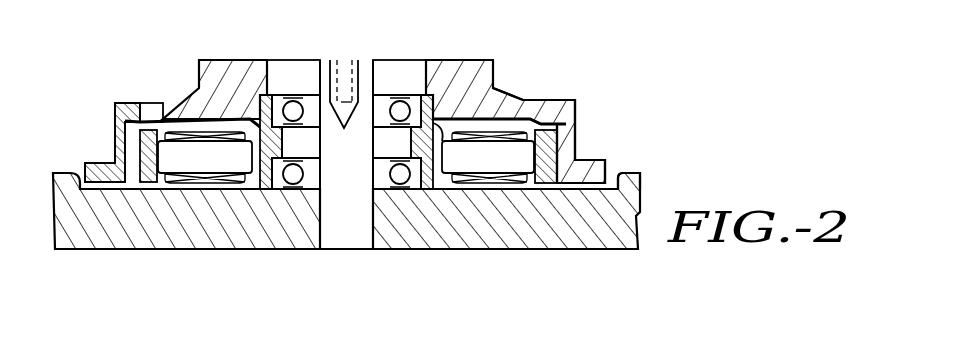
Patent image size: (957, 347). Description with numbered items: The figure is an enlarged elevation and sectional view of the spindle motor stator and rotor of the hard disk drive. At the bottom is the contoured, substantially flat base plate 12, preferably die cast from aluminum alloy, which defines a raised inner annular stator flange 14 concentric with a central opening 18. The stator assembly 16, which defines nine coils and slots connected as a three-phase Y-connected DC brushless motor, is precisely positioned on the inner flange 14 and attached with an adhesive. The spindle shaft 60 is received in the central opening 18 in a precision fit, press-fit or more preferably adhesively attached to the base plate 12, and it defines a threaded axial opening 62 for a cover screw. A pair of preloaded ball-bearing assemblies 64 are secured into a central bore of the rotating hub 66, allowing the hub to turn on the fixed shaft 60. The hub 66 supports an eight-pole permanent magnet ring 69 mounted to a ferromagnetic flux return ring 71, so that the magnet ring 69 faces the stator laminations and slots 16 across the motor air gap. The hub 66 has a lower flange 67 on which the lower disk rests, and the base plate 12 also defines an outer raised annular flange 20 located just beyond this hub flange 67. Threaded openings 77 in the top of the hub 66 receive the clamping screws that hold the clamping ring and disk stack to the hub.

The base plate 12 is at (450, 233).
The inner annular stator flange 14 is at (500, 90).
The stator assembly 16 is at (192, 157).
The central opening 18 is at (320, 222).
The outer raised annular flange 20 is at (628, 172).
The spindle shaft 60 is at (358, 240).
The threaded axial opening 62 is at (357, 66).
The ball-bearing assemblies 64 is at (402, 108).
The rotating hub 66 is at (462, 68).
The lower flange 67 is at (101, 163).
The permanent magnet ring 69 is at (548, 180).
The ferromagnetic flux return ring 71 is at (556, 142).
The threaded openings 77 is at (150, 106).